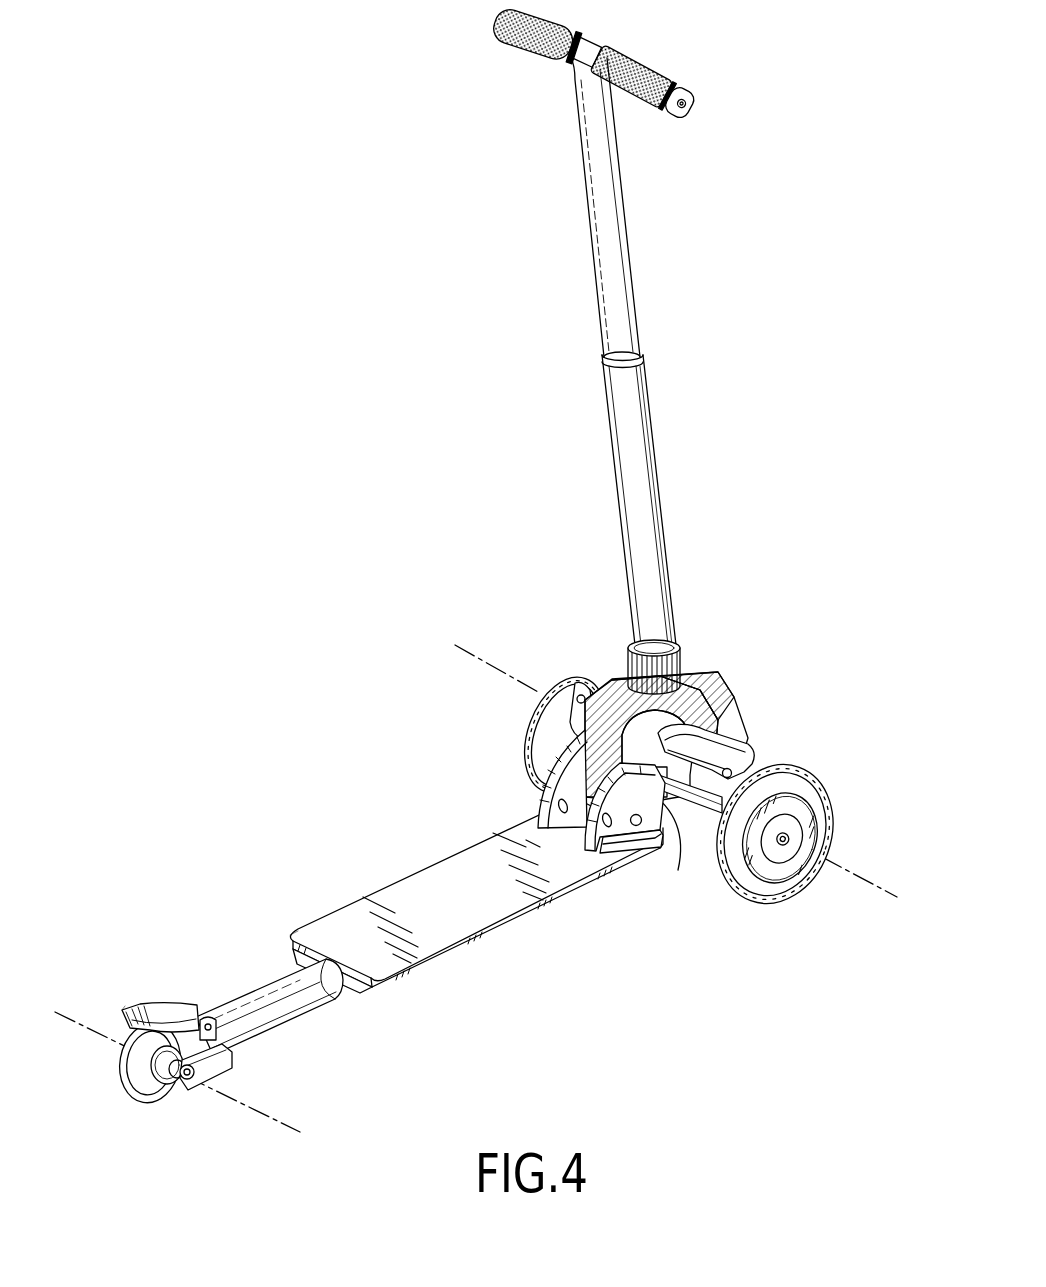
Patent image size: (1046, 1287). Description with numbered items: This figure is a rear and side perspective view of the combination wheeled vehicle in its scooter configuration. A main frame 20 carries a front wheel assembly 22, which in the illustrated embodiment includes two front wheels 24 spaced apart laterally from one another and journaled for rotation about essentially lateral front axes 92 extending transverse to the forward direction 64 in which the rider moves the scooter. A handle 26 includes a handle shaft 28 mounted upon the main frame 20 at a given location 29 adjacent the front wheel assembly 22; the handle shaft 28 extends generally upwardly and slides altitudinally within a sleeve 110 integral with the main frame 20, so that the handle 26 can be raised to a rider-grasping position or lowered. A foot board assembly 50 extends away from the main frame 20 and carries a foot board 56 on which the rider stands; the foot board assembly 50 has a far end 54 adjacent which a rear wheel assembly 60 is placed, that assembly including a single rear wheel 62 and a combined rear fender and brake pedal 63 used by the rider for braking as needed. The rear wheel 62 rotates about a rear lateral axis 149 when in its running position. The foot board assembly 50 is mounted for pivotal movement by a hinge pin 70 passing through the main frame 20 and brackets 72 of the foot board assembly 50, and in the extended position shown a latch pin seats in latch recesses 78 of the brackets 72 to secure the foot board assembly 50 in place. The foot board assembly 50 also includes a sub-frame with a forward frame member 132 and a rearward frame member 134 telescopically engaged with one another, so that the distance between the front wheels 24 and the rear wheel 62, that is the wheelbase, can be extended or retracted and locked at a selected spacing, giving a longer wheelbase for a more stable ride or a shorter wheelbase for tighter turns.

The main frame 20 is at (717, 678).
The front wheel assembly 22 is at (762, 742).
The front wheels 24 is at (530, 740).
The handle 26 is at (497, 48).
The handle shaft 28 is at (590, 163).
The given location 29 is at (688, 672).
The foot board assembly 50 is at (290, 921).
The far end 54 is at (122, 1010).
The foot board 56 is at (397, 890).
The rear wheel assembly 60 is at (137, 1107).
The rear wheel 62 is at (120, 1070).
The combined rear fender and brake pedal 63 is at (175, 1005).
The forward direction 64 is at (868, 696).
The hinge pin 70 is at (634, 846).
The brackets 72 is at (557, 820).
The latch recesses 78 is at (641, 826).
The lateral front axes 92 is at (512, 677).
The sleeve 110 is at (622, 400).
The forward frame member 132 is at (363, 985).
The rearward frame member 134 is at (290, 1020).
The rear lateral axis 149 is at (226, 1098).